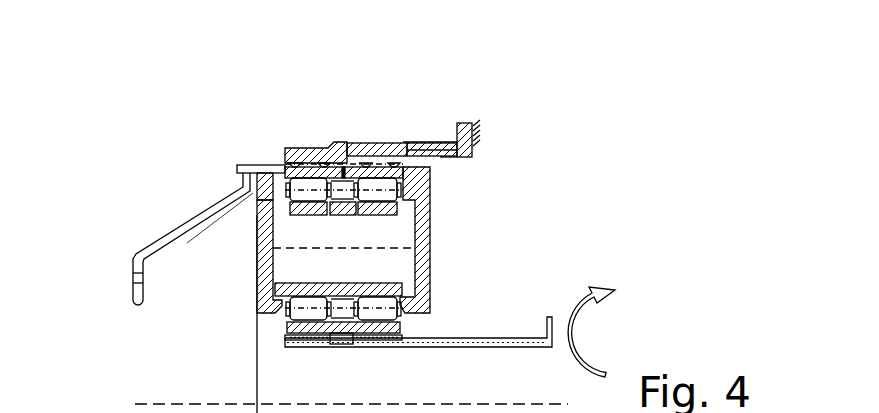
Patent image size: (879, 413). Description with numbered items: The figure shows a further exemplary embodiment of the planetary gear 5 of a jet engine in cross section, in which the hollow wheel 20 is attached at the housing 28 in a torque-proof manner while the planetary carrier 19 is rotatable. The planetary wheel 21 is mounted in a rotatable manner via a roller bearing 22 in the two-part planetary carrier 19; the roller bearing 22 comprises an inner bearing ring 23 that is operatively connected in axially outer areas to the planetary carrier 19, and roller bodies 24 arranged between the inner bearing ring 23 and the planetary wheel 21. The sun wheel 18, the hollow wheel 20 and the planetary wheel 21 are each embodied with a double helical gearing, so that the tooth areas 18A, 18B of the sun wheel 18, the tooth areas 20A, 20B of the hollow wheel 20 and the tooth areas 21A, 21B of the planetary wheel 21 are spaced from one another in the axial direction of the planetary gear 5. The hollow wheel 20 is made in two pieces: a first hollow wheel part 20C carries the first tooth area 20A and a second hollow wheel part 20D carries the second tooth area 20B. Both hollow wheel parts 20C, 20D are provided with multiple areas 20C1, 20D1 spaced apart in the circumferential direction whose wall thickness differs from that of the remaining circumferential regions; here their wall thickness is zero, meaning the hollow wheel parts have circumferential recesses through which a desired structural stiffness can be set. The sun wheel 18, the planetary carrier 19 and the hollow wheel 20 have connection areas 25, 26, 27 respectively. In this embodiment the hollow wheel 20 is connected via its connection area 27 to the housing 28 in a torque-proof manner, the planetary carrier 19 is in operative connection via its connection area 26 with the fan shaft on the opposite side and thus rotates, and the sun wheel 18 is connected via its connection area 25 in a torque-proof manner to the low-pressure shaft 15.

The planetary gear 5 is at (163, 165).
The low-pressure shaft 15 is at (518, 337).
The sun wheel 18 is at (310, 366).
The tooth area 18A is at (322, 339).
The tooth area 18B is at (388, 339).
The planetary carrier 19 is at (160, 215).
The hollow wheel 20 is at (430, 122).
The tooth area 20A is at (293, 147).
The tooth area 20B is at (383, 145).
The first hollow wheel part 20C is at (462, 125).
The area of differing wall thickness 20C1 is at (415, 142).
The second hollow wheel part 20D is at (482, 133).
The area of differing wall thickness 20D1 is at (442, 158).
The planetary wheel 21 is at (293, 266).
The tooth area 21A is at (308, 185).
The tooth area 21B is at (380, 185).
The roller bearing 22 is at (268, 292).
The inner bearing ring 23 is at (265, 218).
The roller bodies 24 is at (262, 304).
The connection area 25 is at (476, 318).
The connection area 26 is at (100, 280).
The connection area 27 is at (488, 168).
The housing 28 is at (478, 132).